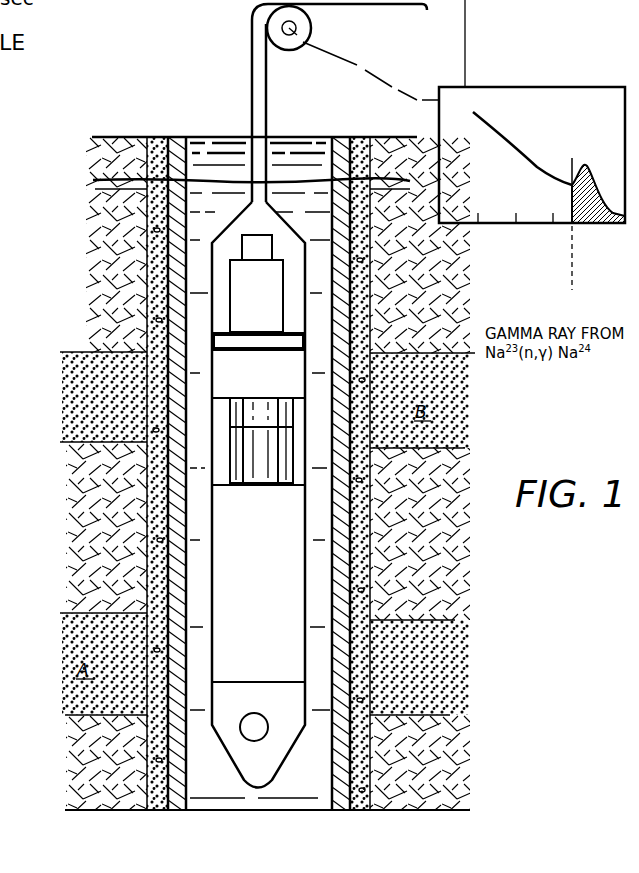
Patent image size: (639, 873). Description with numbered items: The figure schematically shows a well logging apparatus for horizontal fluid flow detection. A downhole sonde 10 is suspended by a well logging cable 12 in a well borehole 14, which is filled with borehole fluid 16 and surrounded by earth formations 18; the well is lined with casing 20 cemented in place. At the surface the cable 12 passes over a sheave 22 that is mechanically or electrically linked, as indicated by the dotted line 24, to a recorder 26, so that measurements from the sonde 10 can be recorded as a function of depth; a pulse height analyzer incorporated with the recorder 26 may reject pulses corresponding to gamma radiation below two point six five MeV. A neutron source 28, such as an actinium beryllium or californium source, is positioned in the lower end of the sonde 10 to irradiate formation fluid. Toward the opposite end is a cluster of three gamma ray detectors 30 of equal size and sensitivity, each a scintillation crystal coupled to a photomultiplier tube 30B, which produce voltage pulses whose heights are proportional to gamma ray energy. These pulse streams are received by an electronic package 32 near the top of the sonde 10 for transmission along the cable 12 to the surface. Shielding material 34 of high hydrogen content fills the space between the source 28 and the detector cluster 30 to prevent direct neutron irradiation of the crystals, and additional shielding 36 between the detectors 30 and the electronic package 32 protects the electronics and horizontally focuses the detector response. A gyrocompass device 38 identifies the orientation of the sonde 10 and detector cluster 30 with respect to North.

The downhole sonde 10 is at (305, 521).
The well logging cable 12 is at (249, 35).
The well borehole 14 is at (188, 233).
The borehole fluid 16 is at (316, 217).
The earth formations 18 is at (96, 524).
The casing 20 is at (342, 560).
The sheave 22 is at (312, 27).
The dotted line 24 is at (362, 62).
The recorder 26 is at (592, 86).
The neutron source 28 is at (268, 728).
The gamma ray detectors 30 is at (230, 417).
The photomultiplier tube 30B is at (232, 338).
The electronic package 32 is at (236, 294).
The shielding material 34 is at (297, 649).
The additional shielding 36 is at (297, 386).
The gyrocompass device 38 is at (273, 249).